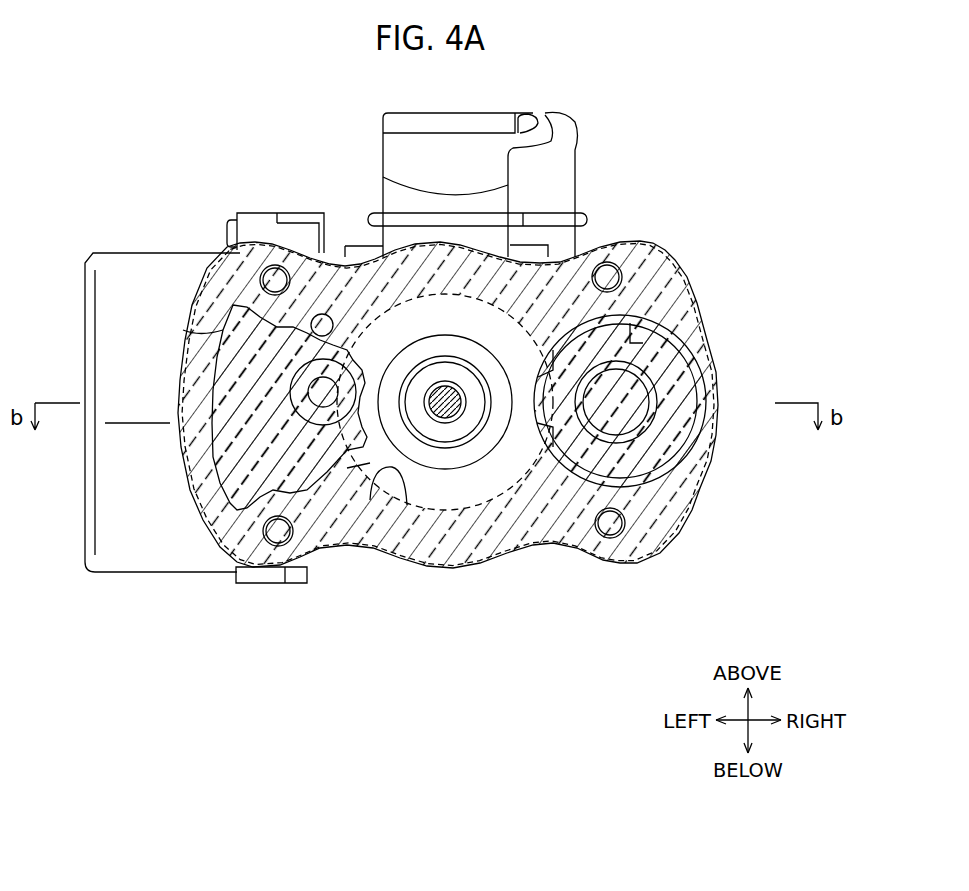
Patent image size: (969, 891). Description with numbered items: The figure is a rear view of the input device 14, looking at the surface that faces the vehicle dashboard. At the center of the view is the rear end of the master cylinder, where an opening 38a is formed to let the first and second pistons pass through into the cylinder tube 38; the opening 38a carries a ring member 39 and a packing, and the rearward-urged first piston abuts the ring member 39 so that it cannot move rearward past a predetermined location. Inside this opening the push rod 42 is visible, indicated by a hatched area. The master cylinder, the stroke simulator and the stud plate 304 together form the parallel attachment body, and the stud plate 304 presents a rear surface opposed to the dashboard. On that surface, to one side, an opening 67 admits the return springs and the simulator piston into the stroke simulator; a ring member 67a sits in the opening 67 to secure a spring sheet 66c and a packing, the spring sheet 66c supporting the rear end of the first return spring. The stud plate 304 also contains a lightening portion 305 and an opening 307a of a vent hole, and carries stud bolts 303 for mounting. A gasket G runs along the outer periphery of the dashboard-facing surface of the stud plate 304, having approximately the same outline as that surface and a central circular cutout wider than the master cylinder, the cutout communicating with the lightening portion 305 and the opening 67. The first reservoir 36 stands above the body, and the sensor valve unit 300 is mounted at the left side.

The input device 14 is at (646, 163).
The first reservoir 36 is at (383, 157).
The cylinder tube 38 is at (445, 470).
The opening 38a is at (425, 382).
The ring member 39 is at (448, 362).
The push rod 42 is at (458, 410).
The spring sheet 66c is at (672, 390).
The opening 67 is at (655, 318).
The ring member 67a is at (672, 350).
The sensor valve unit 300 is at (150, 258).
The stud bolt 303 is at (275, 280).
The stud plate 304 is at (707, 440).
The lightening portion 305 is at (185, 332).
The opening of vent hole 307a is at (323, 392).
The gasket G is at (362, 558).